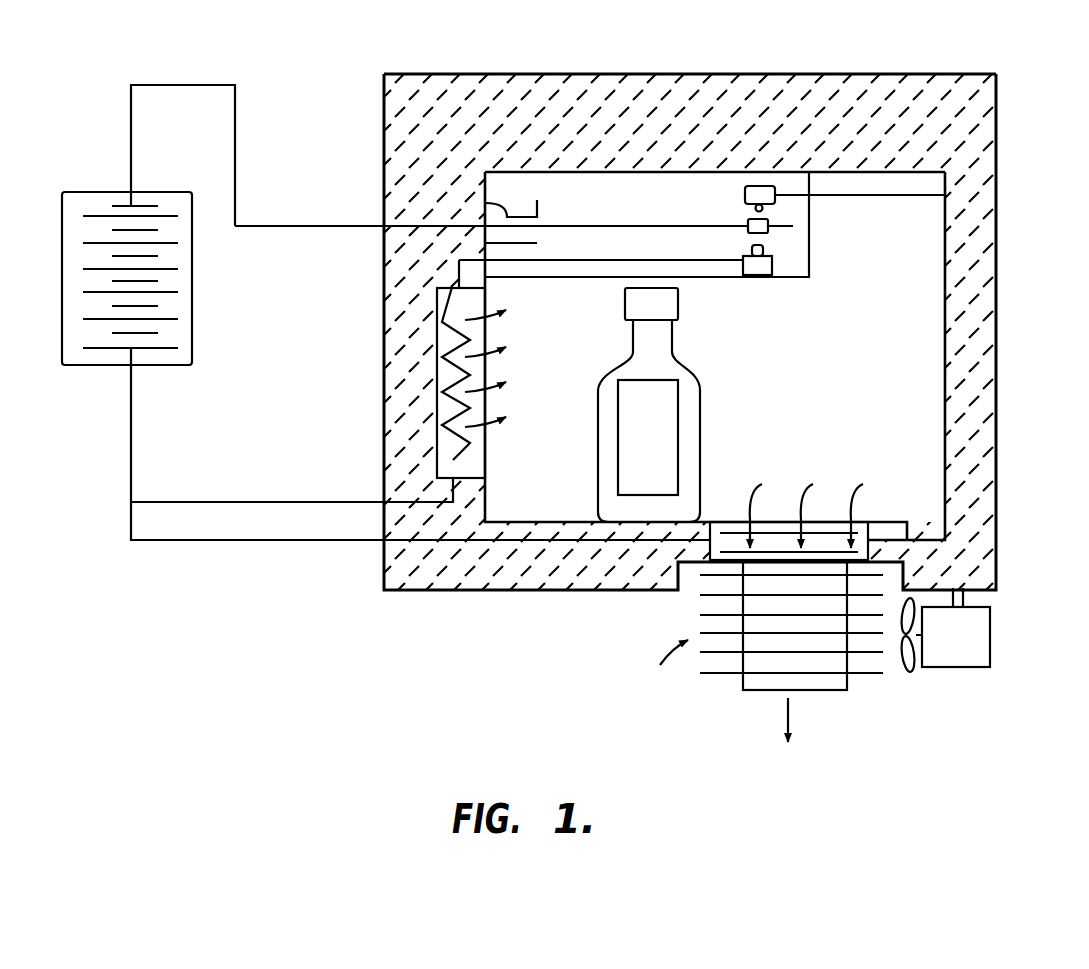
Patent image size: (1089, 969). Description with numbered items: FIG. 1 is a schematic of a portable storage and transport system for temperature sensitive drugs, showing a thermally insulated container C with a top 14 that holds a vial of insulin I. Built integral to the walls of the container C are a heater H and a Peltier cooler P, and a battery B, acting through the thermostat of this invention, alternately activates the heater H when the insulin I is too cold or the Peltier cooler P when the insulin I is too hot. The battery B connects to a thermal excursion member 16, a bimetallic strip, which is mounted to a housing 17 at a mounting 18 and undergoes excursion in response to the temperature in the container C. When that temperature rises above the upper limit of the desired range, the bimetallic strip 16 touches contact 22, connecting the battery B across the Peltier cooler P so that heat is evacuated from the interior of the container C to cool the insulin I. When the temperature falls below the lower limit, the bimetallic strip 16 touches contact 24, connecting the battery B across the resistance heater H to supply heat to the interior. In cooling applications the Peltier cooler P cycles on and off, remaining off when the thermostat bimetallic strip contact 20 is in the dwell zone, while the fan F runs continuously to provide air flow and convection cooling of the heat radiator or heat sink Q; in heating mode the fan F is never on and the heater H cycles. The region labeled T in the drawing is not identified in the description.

The top 14 is at (803, 74).
The thermal excursion member 16 is at (603, 223).
The housing 17 is at (563, 182).
The mounting 18 is at (485, 203).
The thermostat bimetallic strip contact 20 is at (796, 212).
The contact 22 is at (745, 193).
The contact 24 is at (758, 278).
The battery B is at (92, 182).
The thermally insulated container C is at (1006, 342).
The fan F is at (945, 630).
The heater H is at (432, 348).
The insulin I is at (706, 419).
The Peltier cooler P is at (866, 506).
The heat radiator (heat sink) Q is at (692, 615).
The control compartment T is at (822, 236).